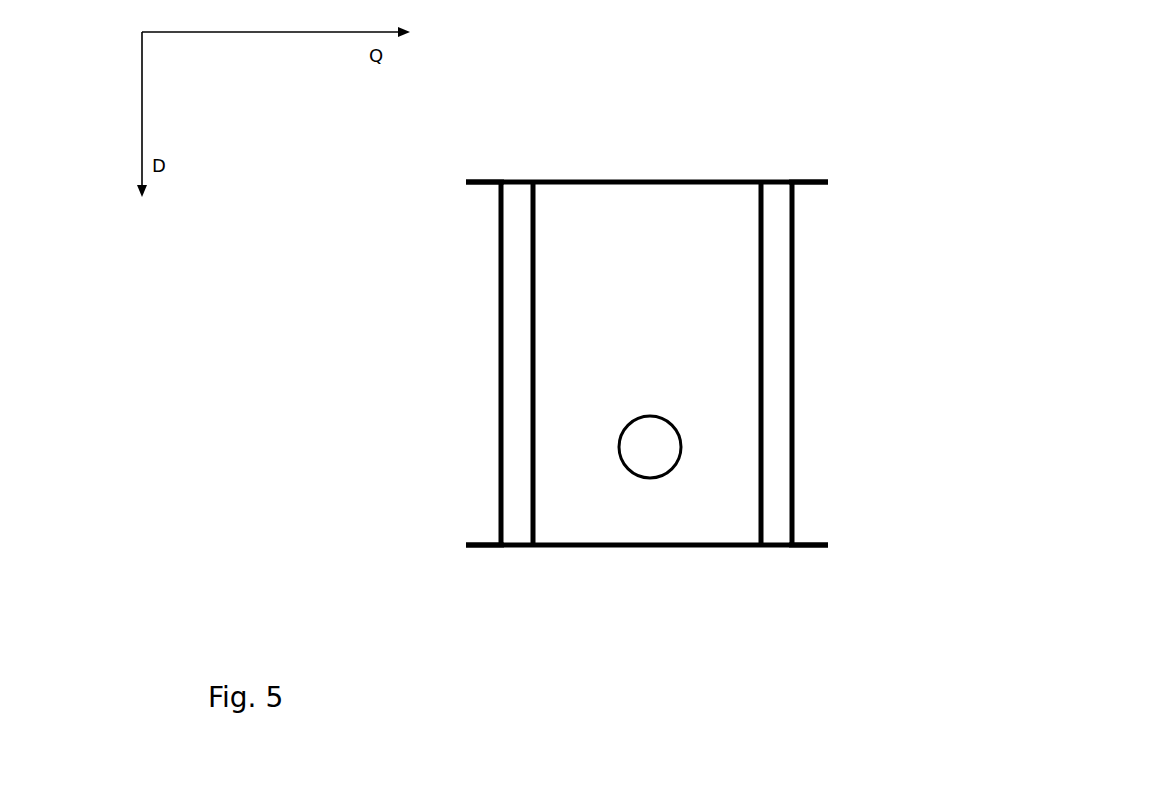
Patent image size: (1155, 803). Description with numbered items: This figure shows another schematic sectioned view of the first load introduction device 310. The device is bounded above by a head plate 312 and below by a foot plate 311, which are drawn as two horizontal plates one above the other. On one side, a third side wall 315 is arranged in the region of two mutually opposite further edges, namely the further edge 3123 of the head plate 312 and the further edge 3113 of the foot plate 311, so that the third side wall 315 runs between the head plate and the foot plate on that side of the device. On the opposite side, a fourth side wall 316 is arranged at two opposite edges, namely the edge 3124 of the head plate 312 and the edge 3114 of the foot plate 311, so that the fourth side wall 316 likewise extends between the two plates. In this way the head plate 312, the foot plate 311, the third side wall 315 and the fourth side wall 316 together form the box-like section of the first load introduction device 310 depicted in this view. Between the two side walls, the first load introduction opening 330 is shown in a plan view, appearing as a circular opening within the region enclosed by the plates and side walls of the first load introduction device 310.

The first load introduction device 310 is at (1040, 117).
The foot plate 311 is at (700, 547).
The head plate 312 is at (713, 180).
The further edge of the foot plate 3113 is at (466, 547).
The opposite edge of the foot plate 3114 is at (827, 547).
The further edge of the head plate 3123 is at (467, 180).
The opposite edge of the head plate 3124 is at (827, 180).
The third side wall 315 is at (523, 302).
The fourth side wall 316 is at (777, 302).
The first load introduction opening 330 is at (647, 443).